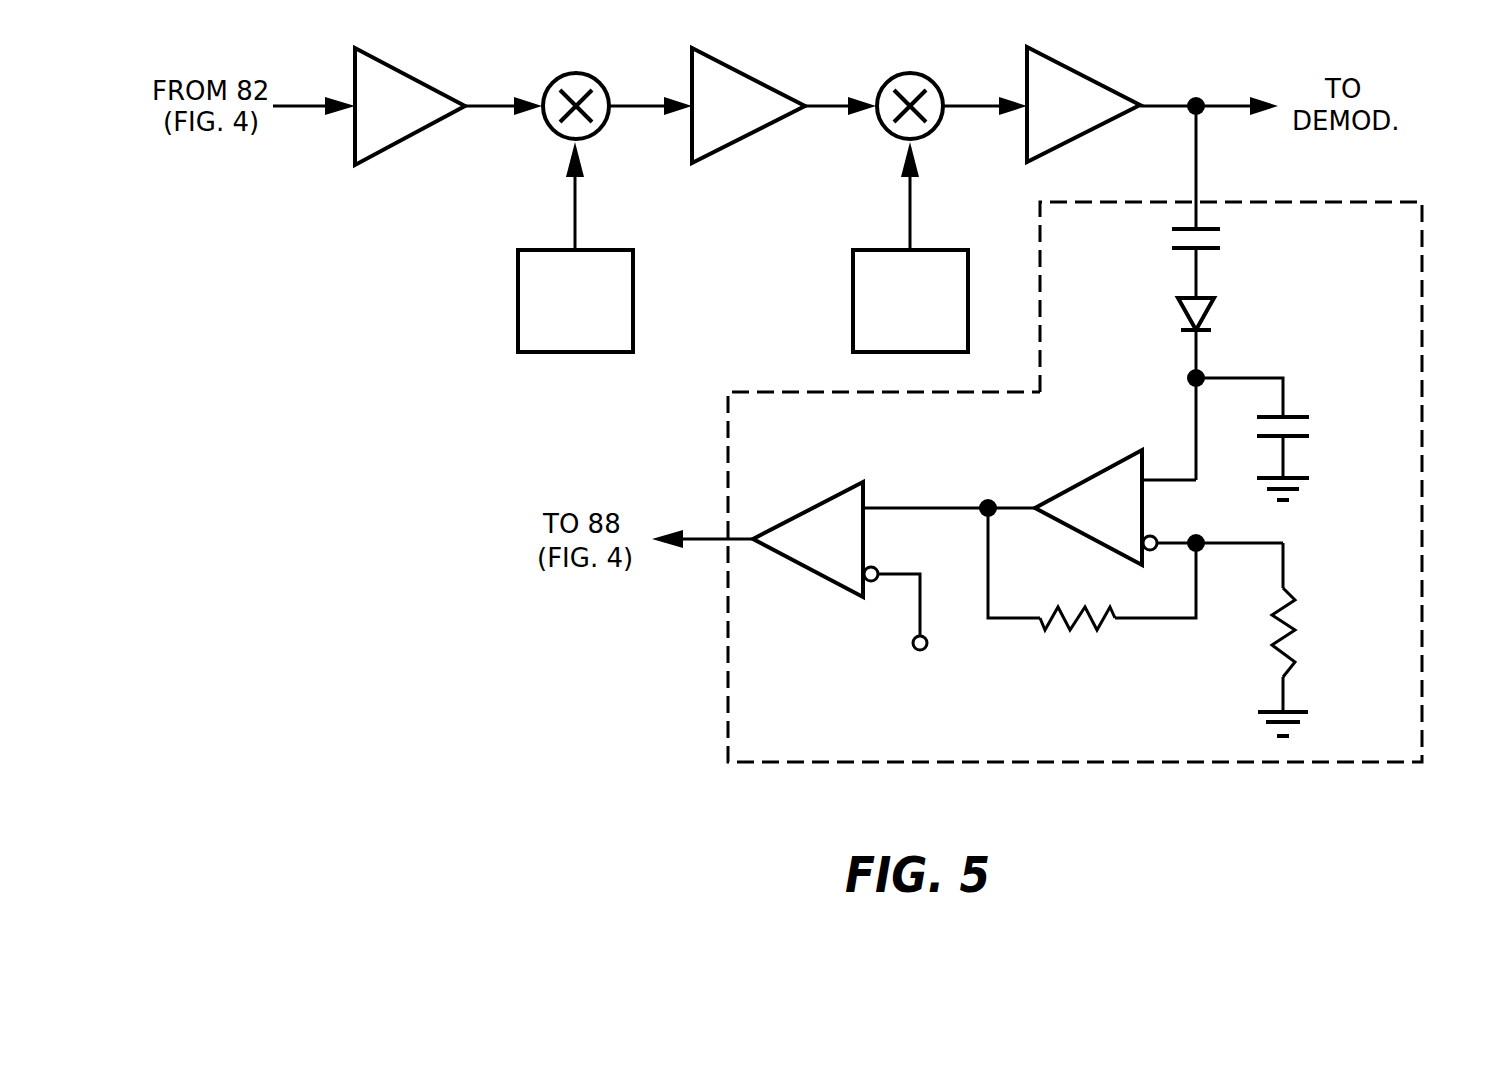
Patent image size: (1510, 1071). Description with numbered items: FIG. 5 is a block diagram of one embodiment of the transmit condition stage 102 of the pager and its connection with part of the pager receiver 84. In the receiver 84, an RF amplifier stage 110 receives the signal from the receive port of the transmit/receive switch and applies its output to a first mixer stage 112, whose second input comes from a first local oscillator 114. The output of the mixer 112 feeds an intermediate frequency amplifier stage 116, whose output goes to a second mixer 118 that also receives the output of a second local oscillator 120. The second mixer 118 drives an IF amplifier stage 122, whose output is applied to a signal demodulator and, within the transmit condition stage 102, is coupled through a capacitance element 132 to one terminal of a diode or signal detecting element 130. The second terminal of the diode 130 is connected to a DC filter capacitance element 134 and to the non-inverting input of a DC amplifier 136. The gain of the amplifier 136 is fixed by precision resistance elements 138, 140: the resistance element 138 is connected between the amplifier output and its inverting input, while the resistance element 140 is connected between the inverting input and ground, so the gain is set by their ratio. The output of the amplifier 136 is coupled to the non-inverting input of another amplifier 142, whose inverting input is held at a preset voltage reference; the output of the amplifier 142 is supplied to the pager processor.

The pager receiver 84 is at (740, 221).
The transmit condition stage 102 is at (1422, 427).
The RF amplifier stage 110 is at (390, 65).
The mixer stage 112 is at (580, 74).
The first local oscillator 114 is at (537, 249).
The intermediate frequency amplifier stage 116 is at (733, 65).
The second mixer 118 is at (912, 73).
The second local oscillator 120 is at (873, 249).
The IF amplifier stage 122 is at (1062, 62).
The diode or signal detecting element 130 is at (1213, 312).
The capacitance element 132 is at (1172, 237).
The DC filter or capacitance element 134 is at (1298, 425).
The DC amplifier 136 is at (1110, 467).
The resistance element 138 is at (1067, 637).
The resistance element 140 is at (1295, 628).
The amplifier 142 is at (835, 495).